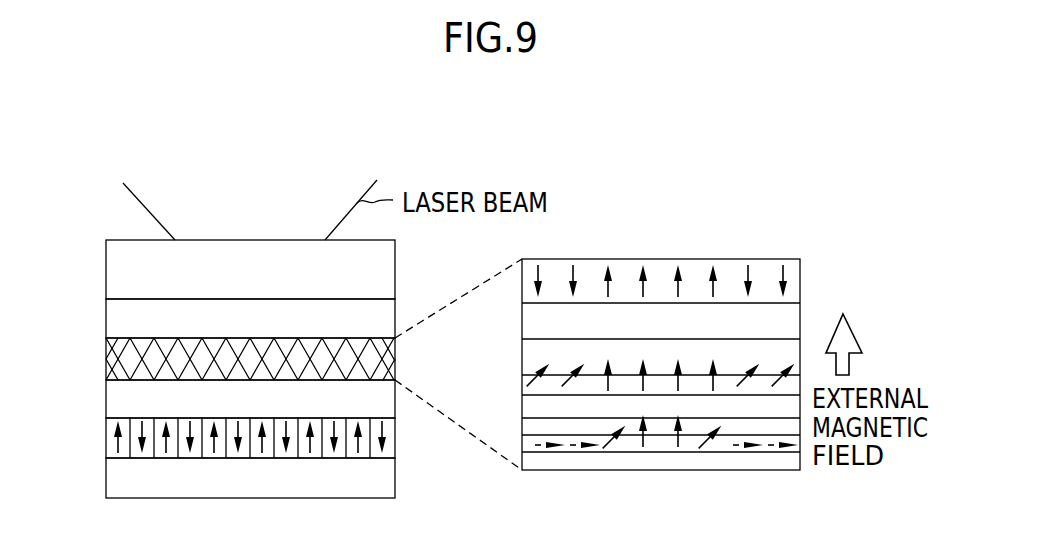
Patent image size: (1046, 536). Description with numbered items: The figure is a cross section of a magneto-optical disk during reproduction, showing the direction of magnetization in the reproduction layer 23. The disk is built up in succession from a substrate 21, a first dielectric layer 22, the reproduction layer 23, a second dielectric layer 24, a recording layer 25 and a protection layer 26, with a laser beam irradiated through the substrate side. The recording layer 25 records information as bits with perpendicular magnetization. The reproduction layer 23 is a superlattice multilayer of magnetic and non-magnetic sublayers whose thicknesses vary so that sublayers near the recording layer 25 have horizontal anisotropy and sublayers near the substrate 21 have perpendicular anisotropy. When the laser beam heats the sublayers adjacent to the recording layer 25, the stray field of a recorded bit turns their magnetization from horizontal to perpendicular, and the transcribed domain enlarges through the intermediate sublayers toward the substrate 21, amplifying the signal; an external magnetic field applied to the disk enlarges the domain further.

The substrate 21 is at (106, 268).
The first dielectric layer 22 is at (106, 319).
The reproduction layer 23 is at (106, 358).
The second dielectric layer 24 is at (106, 398).
The recording layer 25 is at (106, 438).
The protection layer 26 is at (106, 478).